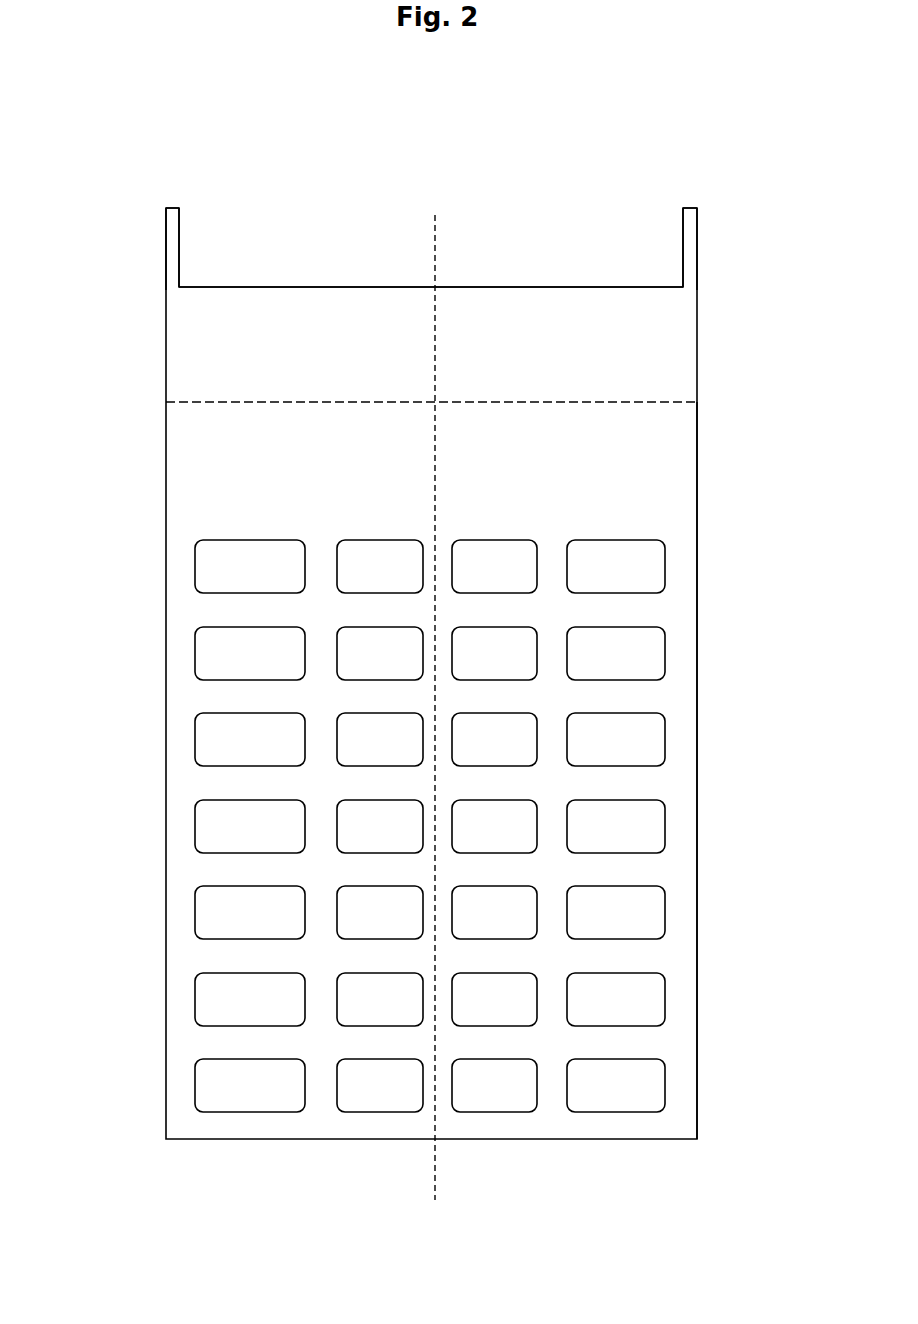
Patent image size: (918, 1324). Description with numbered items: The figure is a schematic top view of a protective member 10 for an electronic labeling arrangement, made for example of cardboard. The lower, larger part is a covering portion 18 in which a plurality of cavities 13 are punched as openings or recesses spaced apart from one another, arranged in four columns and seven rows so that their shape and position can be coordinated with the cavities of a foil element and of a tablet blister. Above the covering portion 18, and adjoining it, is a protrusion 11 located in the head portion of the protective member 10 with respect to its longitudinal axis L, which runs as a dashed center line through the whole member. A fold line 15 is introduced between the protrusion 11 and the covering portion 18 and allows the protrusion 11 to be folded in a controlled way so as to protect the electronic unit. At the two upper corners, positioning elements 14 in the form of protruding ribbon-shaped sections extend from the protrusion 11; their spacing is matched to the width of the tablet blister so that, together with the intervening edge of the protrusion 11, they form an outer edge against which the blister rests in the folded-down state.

The protective member 10 is at (113, 143).
The protrusion 11 is at (564, 330).
The cavities 13 is at (646, 655).
The positioning elements 14 is at (173, 242).
The fold line 15 is at (188, 400).
The covering portion 18 is at (670, 458).
The longitudinal axis L is at (435, 228).